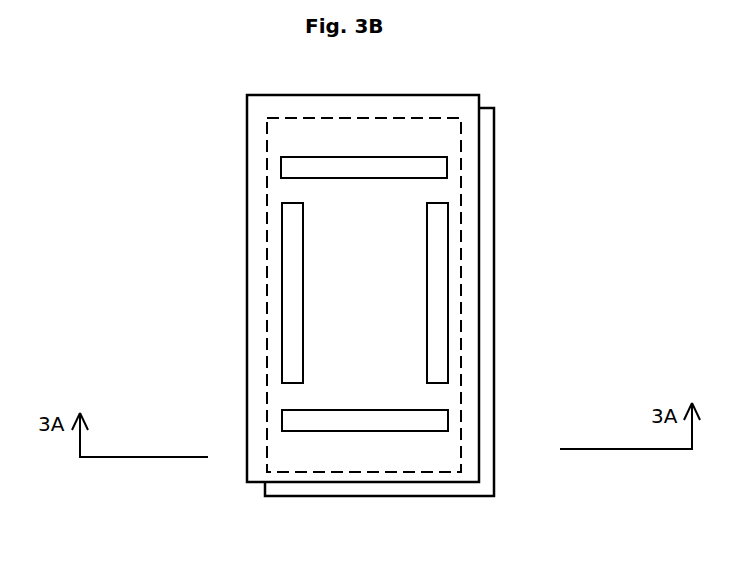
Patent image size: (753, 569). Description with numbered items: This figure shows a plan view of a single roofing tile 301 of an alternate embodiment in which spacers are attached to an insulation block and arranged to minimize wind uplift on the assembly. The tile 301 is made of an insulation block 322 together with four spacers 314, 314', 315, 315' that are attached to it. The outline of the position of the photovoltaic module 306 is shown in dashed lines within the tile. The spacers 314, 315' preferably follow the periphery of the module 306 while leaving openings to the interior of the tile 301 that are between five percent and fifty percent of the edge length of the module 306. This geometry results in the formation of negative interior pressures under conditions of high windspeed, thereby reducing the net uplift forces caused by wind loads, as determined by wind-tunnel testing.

The roofing tile 301 is at (530, 357).
The photovoltaic module 306 is at (462, 233).
The spacer 314 is at (355, 477).
The spacer 314' is at (386, 116).
The spacer 315 is at (519, 293).
The spacer 315' is at (220, 278).
The insulation block 322 is at (342, 367).